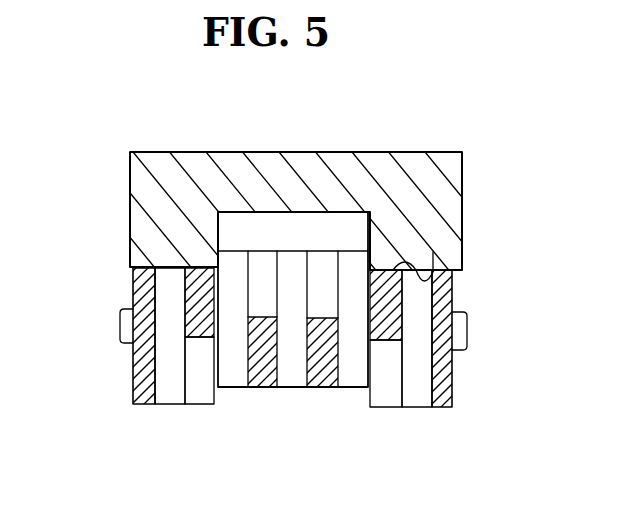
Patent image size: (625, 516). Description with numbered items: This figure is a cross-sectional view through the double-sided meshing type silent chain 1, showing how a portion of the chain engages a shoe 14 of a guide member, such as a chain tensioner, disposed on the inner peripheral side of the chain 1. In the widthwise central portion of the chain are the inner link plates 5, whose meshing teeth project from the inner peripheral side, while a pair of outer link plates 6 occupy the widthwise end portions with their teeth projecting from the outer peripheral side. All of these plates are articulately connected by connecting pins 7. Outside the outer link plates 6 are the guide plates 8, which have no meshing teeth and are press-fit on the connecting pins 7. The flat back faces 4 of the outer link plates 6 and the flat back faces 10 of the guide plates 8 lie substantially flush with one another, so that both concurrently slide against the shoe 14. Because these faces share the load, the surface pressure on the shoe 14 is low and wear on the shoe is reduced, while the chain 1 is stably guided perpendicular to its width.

The double-sided meshing type silent chain 1 is at (303, 397).
The flat back face 4 is at (438, 292).
The inner link plate 5 is at (227, 386).
The outer link plate 6 is at (194, 394).
The connecting pin 7 is at (467, 331).
The guide plate 8 is at (133, 373).
The flat back face 10 is at (133, 283).
The shoe 14 is at (378, 165).